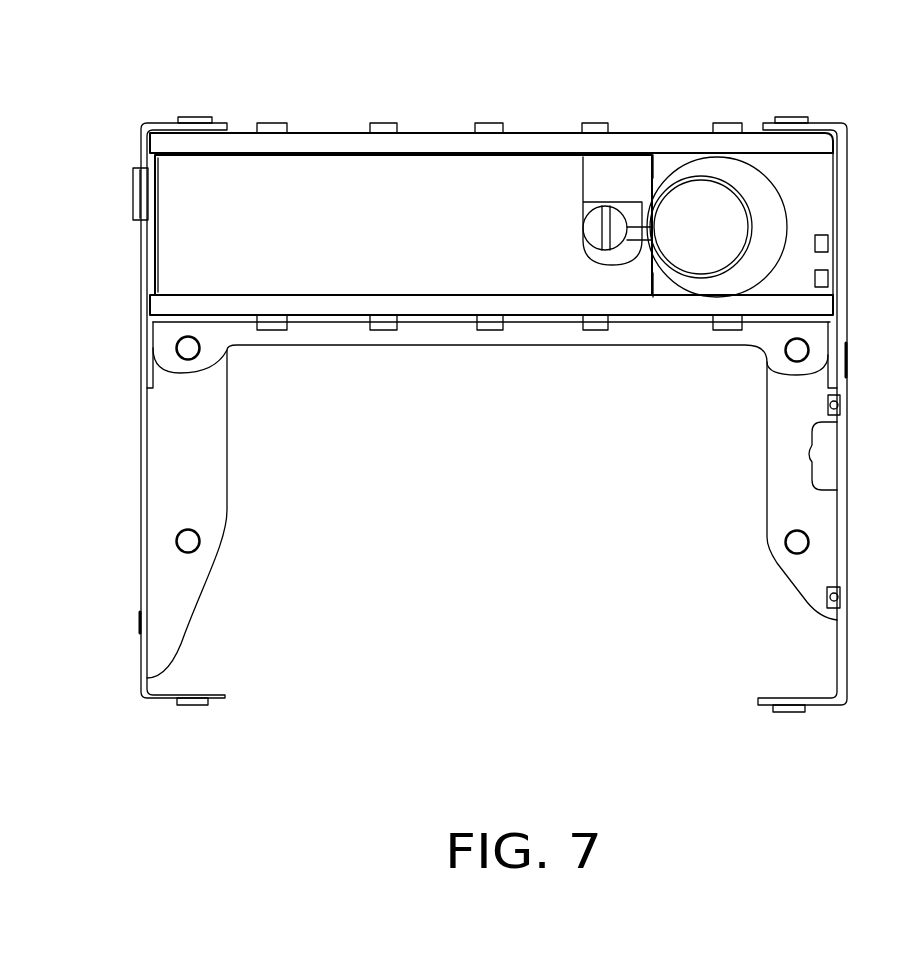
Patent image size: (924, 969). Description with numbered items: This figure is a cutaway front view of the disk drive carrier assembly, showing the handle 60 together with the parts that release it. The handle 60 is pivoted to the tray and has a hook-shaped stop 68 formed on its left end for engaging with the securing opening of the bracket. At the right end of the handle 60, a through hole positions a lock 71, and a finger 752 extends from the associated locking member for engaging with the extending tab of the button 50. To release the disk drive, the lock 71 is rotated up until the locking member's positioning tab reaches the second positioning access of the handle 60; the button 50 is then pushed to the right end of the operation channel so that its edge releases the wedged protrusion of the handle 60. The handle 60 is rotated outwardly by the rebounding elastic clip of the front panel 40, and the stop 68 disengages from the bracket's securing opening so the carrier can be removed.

The front panel 40 is at (795, 165).
The button 50 is at (730, 218).
The handle 60 is at (472, 192).
The hook-shaped stop 68 is at (147, 188).
The lock 71 is at (590, 232).
The finger 752 is at (638, 212).